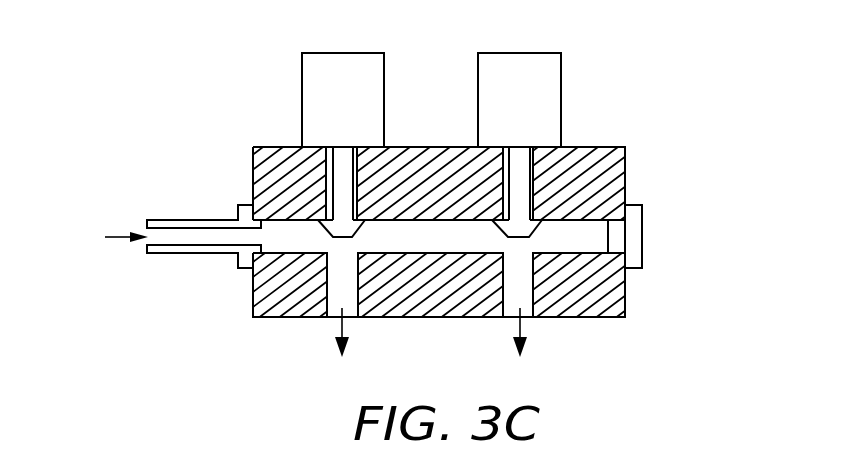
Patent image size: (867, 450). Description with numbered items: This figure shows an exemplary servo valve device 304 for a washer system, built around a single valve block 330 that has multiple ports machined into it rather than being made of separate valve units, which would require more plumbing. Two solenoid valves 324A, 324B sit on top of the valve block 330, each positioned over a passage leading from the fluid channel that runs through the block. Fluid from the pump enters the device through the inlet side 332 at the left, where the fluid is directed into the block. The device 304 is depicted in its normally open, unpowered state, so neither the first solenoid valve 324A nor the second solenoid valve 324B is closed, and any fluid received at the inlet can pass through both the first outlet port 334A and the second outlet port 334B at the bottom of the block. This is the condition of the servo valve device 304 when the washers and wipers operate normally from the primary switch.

The servo valve device 304 is at (710, 45).
The valve block 330 is at (603, 147).
The first solenoid valve 324A is at (302, 105).
The second solenoid valve 324B is at (561, 99).
The inlet tubes 332 is at (113, 219).
The first outlet port 334A is at (325, 353).
The second outlet port 334B is at (502, 345).